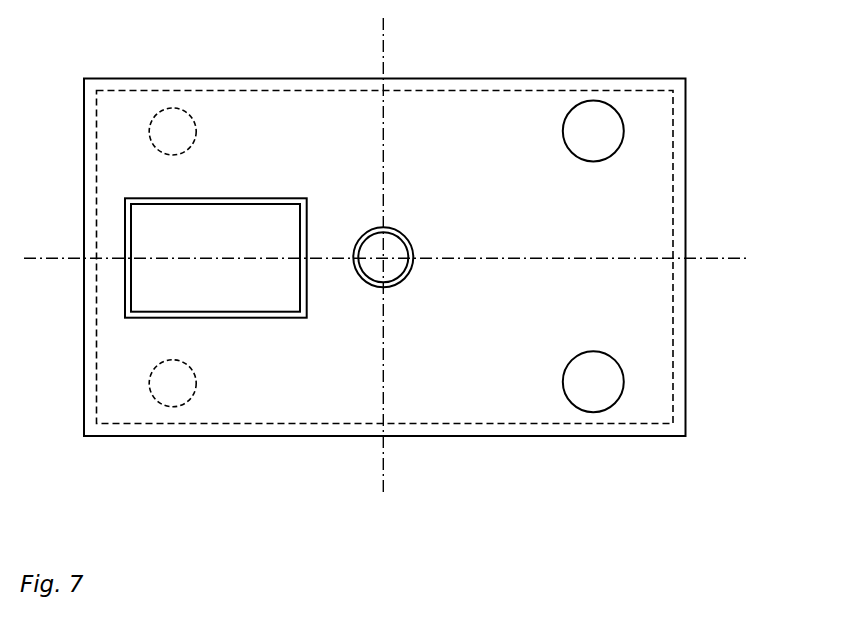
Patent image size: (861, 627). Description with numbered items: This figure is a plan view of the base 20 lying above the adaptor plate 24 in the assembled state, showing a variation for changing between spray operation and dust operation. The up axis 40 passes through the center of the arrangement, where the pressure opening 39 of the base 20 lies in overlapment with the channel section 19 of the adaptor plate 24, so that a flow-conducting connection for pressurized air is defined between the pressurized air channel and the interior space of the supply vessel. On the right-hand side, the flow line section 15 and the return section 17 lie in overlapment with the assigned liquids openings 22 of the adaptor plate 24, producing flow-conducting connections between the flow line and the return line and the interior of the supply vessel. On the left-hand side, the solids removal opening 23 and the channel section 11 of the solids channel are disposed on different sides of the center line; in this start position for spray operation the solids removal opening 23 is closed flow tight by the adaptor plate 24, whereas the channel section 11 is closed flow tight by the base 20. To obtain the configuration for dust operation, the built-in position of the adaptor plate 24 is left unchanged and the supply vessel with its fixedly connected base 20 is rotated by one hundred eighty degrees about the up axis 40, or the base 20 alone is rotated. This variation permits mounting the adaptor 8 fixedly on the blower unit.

The adaptor 8 is at (680, 348).
The channel section 11 is at (300, 293).
The flow line section 15 is at (196, 123).
The return section 17 is at (196, 389).
The channel section 19 is at (408, 270).
The base 20 is at (686, 126).
The liquids openings 22 is at (563, 130).
The solids removal opening 23 is at (262, 198).
The adaptor plate 24 is at (673, 322).
The pressure opening 39 is at (406, 238).
The up axis 40 is at (383, 257).